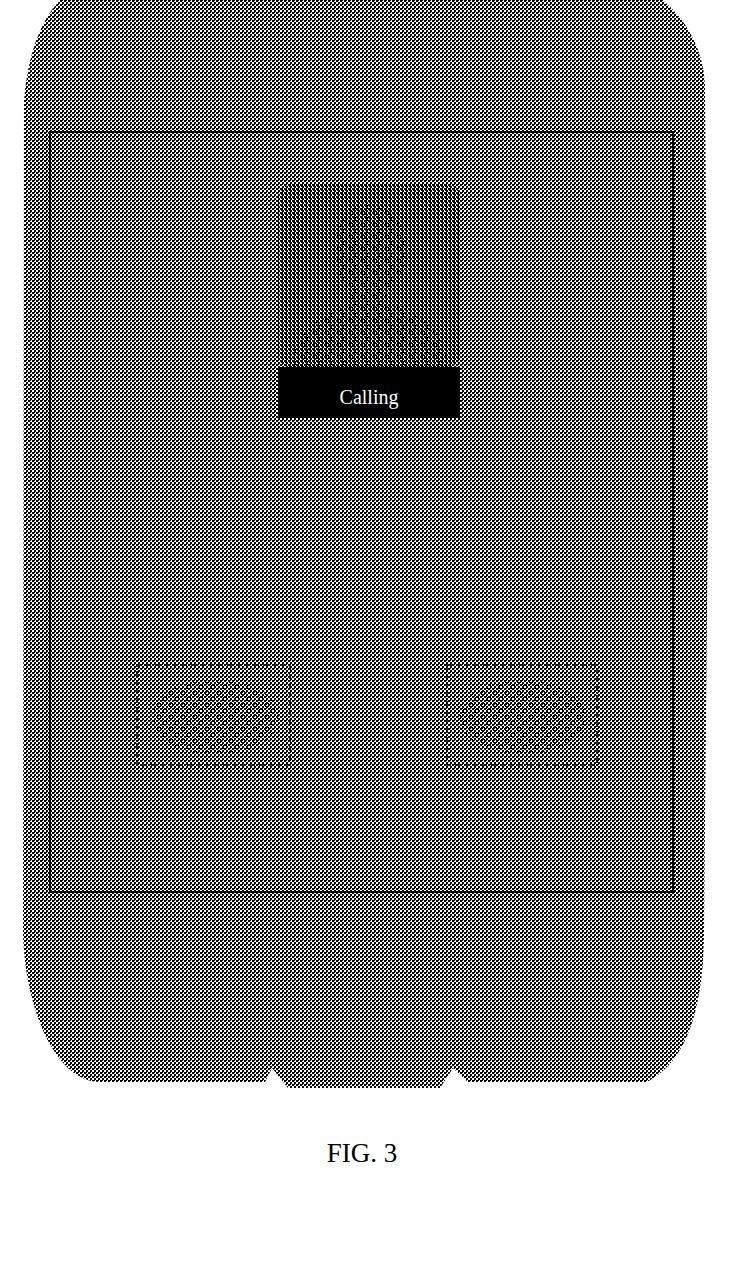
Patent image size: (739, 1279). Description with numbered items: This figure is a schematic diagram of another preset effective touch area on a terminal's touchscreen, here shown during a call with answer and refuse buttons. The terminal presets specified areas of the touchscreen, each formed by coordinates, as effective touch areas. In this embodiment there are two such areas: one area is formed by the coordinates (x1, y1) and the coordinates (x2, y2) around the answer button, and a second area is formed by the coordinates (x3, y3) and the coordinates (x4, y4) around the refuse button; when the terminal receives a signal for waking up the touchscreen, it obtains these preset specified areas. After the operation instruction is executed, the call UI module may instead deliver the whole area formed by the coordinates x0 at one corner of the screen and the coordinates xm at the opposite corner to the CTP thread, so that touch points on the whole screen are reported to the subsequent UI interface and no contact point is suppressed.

The coordinates (x0, y0) x0 is at (363, 515).
The coordinates (xm, yn) xm is at (361, 512).
The coordinates (x1, y1) x1 is at (181, 697).
The coordinates (x2, y2) x2 is at (254, 744).
The coordinates (x3, y3) x3 is at (494, 697).
The coordinates (x4, y4) x4 is at (560, 744).